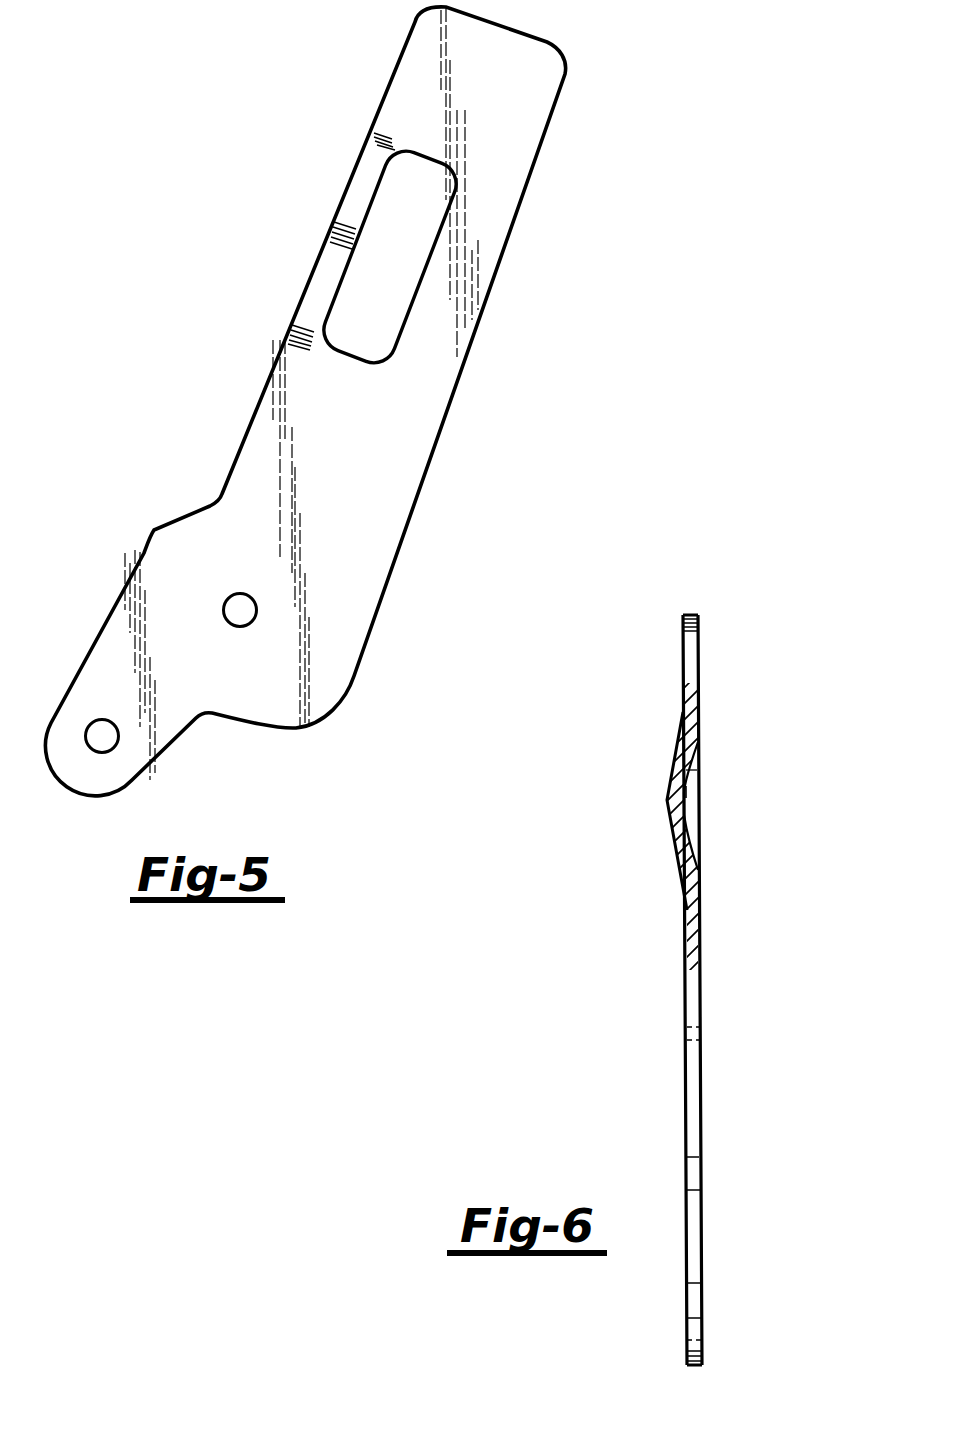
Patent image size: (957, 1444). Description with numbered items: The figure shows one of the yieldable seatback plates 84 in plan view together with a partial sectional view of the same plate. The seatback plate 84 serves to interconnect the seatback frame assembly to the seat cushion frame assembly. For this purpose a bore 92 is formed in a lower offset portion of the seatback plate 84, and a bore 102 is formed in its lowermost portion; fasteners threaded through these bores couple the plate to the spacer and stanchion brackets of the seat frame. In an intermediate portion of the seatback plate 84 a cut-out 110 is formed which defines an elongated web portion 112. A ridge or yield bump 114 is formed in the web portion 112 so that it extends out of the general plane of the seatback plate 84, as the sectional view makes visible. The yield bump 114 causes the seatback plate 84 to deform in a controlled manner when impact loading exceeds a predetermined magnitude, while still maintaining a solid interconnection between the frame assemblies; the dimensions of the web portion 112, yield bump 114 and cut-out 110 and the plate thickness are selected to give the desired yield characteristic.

In FIG. 5, the seatback plate 84 is at (608, 356).
In FIG. 6, the seatback plate 84 is at (724, 675).
In FIG. 5, the bore 92 is at (258, 612).
In FIG. 6, the bore 92 is at (700, 1190).
In FIG. 5, the bore 102 is at (112, 738).
In FIG. 6, the bore 102 is at (701, 1318).
In FIG. 5, the cut-out 110 is at (440, 222).
In FIG. 6, the cut-out 110 is at (694, 796).
In FIG. 5, the web portion 112 is at (369, 164).
In FIG. 6, the web portion 112 is at (675, 840).
In FIG. 5, the yield bump 114 is at (332, 238).
In FIG. 6, the yield bump 114 is at (668, 797).